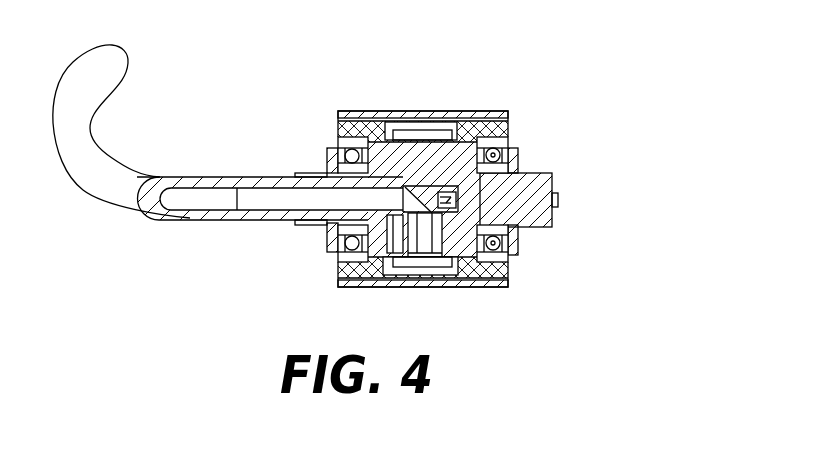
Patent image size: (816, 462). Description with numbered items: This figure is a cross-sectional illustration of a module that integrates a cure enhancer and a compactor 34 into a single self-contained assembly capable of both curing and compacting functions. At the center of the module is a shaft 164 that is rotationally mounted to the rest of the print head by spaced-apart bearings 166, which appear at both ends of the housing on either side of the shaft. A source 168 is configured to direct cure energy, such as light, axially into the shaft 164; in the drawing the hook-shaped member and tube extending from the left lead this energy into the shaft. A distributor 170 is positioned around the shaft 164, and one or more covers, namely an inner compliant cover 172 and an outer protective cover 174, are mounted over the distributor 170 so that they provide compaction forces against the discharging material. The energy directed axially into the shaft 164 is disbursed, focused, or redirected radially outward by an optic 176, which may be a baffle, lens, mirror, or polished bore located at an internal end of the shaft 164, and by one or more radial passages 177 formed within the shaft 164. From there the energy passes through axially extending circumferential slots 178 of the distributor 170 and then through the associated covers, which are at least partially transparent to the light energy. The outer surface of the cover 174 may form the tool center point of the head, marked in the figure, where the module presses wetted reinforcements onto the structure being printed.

The end effector assembly 34 is at (594, 50).
The shaft 164 is at (520, 211).
The bearings 166 is at (342, 141).
The source 168 is at (275, 203).
The distributor 170 is at (477, 128).
The inner compliant cover 172 is at (423, 121).
The outer protective cover 174 is at (367, 112).
The optic 176 is at (456, 189).
The radial passages 177 is at (408, 237).
The axially extending circumferential slots 178 is at (432, 265).